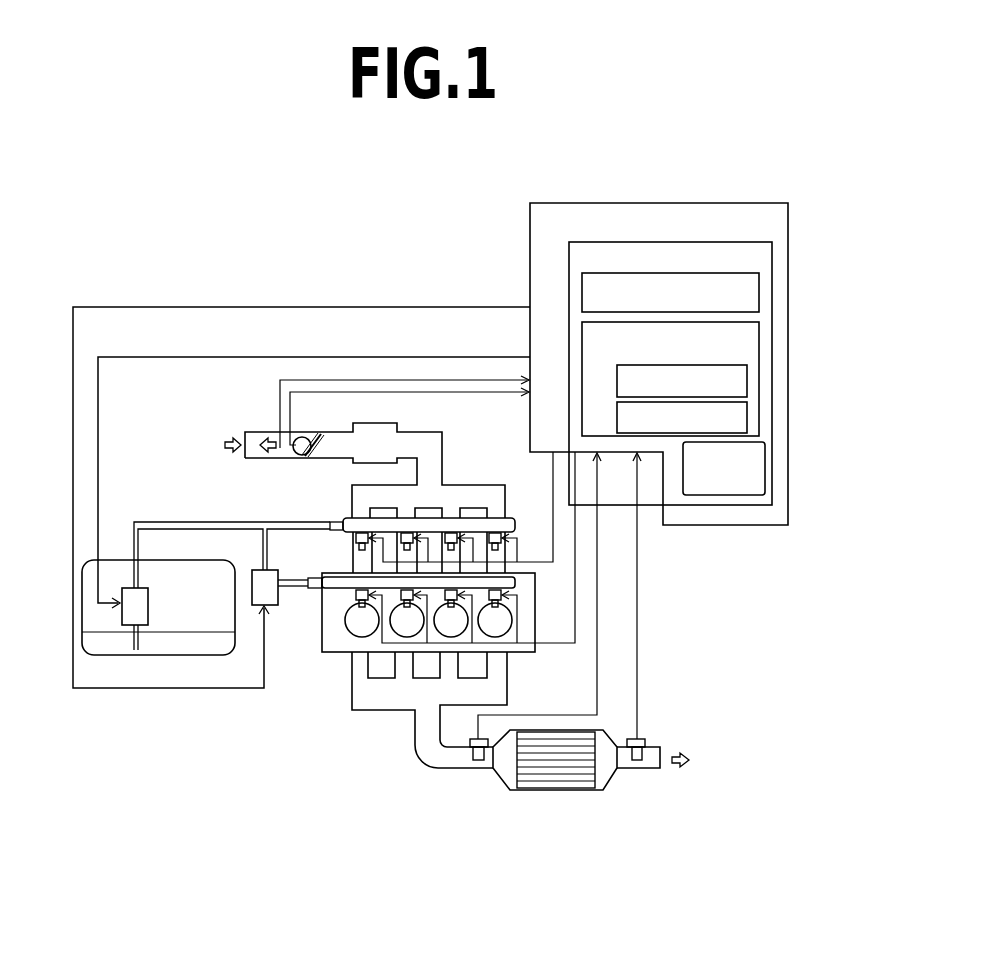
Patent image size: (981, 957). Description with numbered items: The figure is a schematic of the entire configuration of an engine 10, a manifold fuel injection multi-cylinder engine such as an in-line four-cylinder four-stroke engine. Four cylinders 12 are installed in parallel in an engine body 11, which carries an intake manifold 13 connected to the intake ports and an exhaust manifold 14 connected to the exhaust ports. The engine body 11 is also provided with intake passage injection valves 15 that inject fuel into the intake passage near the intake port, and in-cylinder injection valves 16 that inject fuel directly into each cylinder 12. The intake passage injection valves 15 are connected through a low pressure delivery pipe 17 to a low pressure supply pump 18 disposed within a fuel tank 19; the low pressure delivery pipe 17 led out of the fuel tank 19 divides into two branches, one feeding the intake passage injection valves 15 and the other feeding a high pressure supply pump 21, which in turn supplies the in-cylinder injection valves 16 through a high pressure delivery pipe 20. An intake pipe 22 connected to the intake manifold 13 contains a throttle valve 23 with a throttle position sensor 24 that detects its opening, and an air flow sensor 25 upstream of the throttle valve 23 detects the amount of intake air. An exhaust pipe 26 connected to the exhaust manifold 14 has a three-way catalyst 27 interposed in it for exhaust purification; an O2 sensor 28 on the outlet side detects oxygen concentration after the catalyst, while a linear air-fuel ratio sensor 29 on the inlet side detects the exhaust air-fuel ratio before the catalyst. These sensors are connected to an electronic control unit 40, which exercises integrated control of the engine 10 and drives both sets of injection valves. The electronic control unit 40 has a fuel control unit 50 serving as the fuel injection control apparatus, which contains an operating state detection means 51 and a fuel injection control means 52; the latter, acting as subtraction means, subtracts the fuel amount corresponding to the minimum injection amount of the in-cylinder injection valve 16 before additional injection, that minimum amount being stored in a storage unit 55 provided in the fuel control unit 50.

The engine 10 is at (190, 210).
The engine body 11 is at (332, 632).
The cylinder 12 is at (505, 619).
The intake manifold 13 is at (477, 498).
The exhaust manifold 14 is at (373, 688).
The intake passage injection valve 15 is at (354, 542).
The in-cylinder injection valve 16 is at (355, 600).
The low pressure delivery pipe 17 is at (247, 522).
The low pressure supply pump 18 is at (142, 607).
The fuel tank 19 is at (115, 560).
The high pressure delivery pipe 20 is at (284, 577).
The high pressure supply pump 21 is at (258, 570).
The intake pipe 22 is at (255, 440).
The throttle valve 23 is at (322, 437).
The throttle position sensor 24 is at (300, 437).
The air flow sensor 25 is at (270, 460).
The exhaust pipe 26 is at (632, 770).
The three-way catalyst 27 is at (560, 780).
The O2 sensor 28 is at (641, 739).
The linear air-fuel ratio sensor 29 is at (476, 762).
The electronic control unit 40 is at (750, 203).
The fuel control unit 50 is at (773, 252).
The operating state detection means 51 is at (762, 293).
The fuel injection control means 52 is at (760, 340).
The storage unit 55 is at (765, 458).